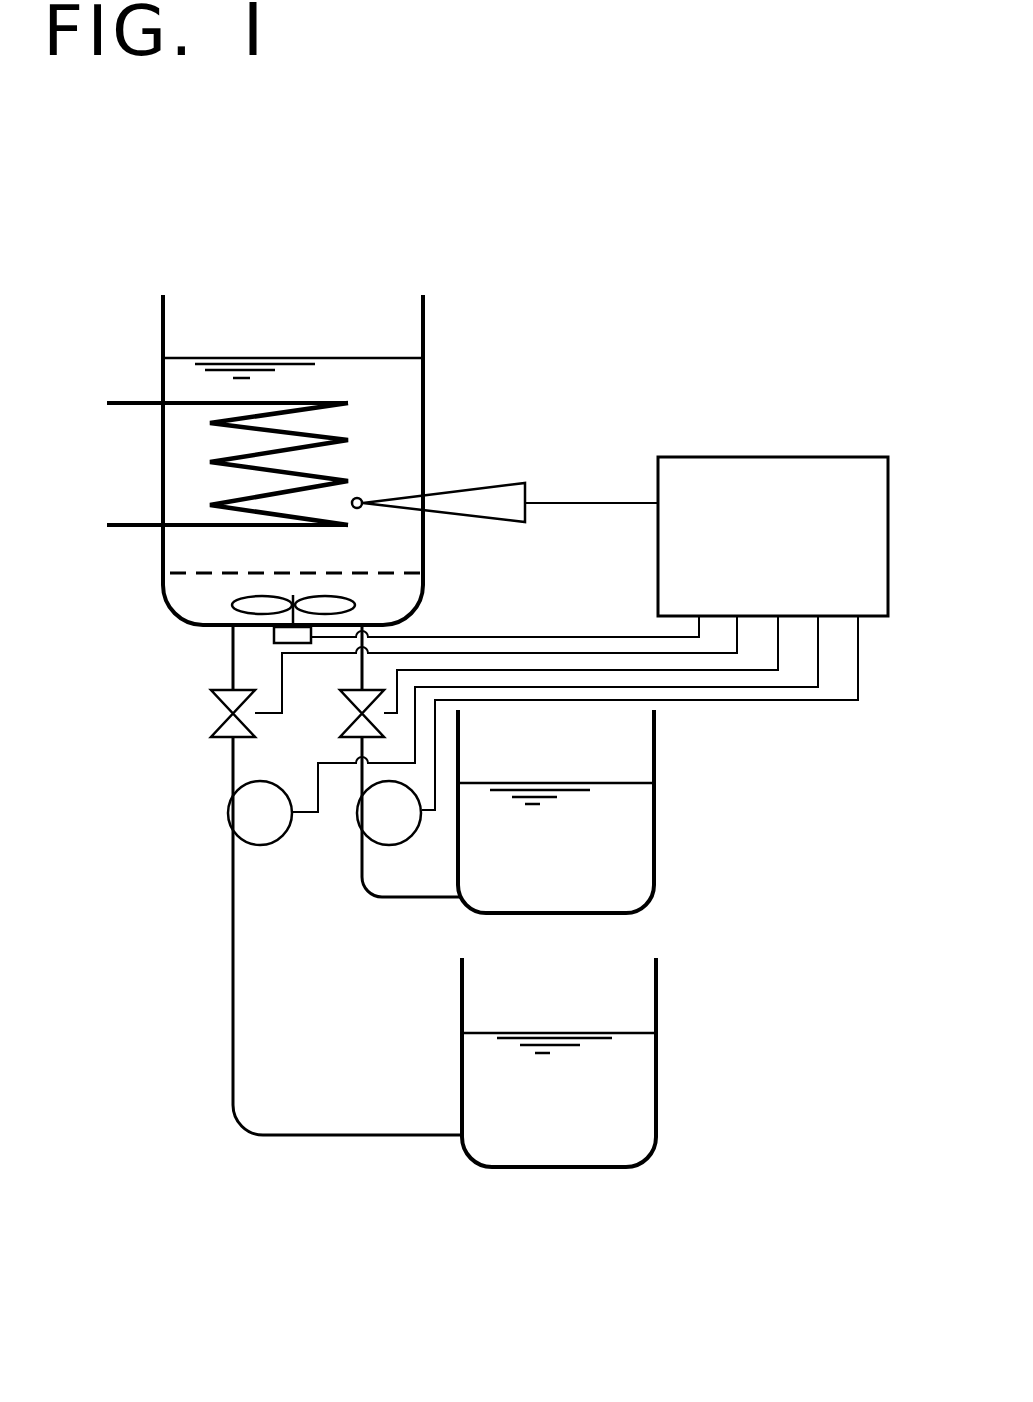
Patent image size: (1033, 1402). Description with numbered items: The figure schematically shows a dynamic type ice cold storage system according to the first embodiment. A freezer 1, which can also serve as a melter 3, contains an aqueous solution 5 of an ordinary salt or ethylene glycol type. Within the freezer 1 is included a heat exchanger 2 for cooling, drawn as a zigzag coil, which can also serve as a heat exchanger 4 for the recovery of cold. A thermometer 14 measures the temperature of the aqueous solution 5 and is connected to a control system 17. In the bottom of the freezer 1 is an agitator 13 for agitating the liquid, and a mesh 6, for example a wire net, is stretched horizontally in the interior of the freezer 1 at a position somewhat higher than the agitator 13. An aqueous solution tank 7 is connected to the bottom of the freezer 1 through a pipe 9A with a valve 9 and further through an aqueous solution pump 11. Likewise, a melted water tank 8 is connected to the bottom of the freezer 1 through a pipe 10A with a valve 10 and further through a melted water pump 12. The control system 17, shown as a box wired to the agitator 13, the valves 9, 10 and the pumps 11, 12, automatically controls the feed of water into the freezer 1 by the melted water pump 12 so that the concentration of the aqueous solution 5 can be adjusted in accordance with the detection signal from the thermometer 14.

The freezer 1 is at (242, 460).
The heat exchanger for cooling 2 is at (227, 447).
The melter 3 is at (165, 600).
The heat exchanger for the recovery of cold 4 is at (213, 424).
The aqueous solution 5 is at (245, 378).
The mesh 6 is at (368, 573).
The aqueous solution tank 7 is at (656, 878).
The melted water tank 8 is at (658, 1137).
The valve 9 is at (352, 704).
The pipe 9A is at (362, 870).
The valve 10 is at (222, 704).
The pipe 10A is at (233, 765).
The aqueous solution pump 11 is at (375, 828).
The melted water pump 12 is at (245, 826).
The agitator 13 is at (208, 620).
The thermometer 14 is at (497, 483).
The control system 17 is at (690, 467).